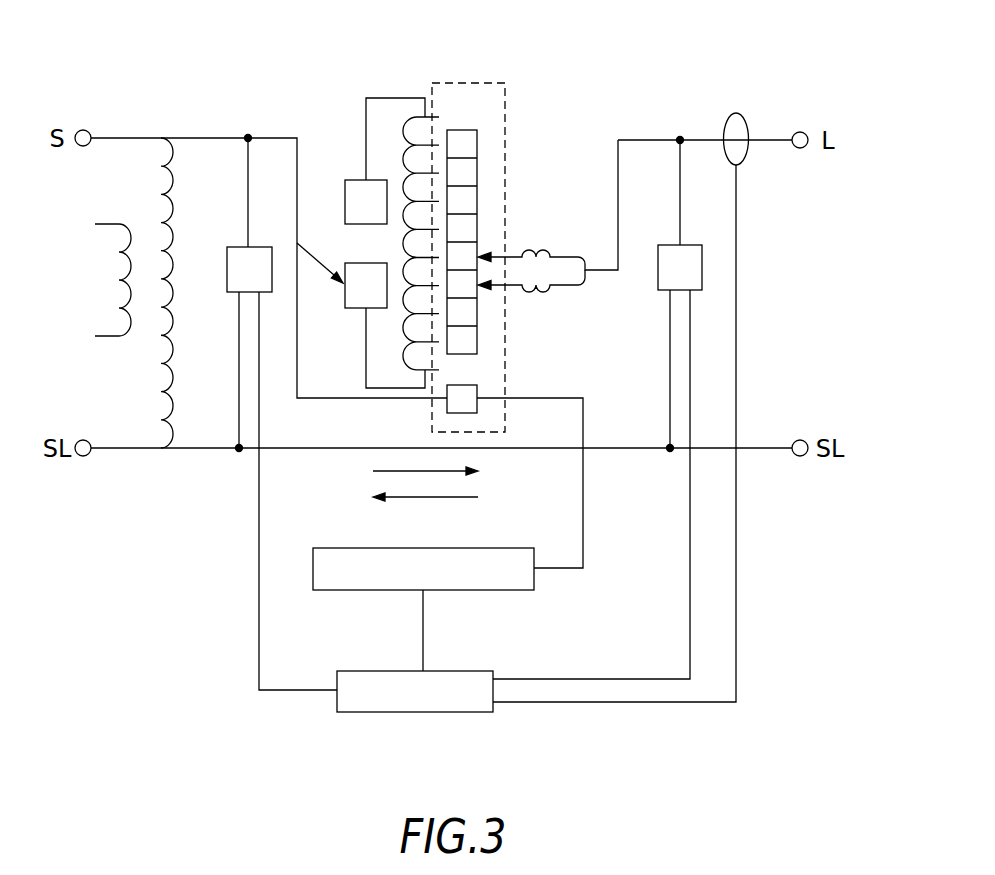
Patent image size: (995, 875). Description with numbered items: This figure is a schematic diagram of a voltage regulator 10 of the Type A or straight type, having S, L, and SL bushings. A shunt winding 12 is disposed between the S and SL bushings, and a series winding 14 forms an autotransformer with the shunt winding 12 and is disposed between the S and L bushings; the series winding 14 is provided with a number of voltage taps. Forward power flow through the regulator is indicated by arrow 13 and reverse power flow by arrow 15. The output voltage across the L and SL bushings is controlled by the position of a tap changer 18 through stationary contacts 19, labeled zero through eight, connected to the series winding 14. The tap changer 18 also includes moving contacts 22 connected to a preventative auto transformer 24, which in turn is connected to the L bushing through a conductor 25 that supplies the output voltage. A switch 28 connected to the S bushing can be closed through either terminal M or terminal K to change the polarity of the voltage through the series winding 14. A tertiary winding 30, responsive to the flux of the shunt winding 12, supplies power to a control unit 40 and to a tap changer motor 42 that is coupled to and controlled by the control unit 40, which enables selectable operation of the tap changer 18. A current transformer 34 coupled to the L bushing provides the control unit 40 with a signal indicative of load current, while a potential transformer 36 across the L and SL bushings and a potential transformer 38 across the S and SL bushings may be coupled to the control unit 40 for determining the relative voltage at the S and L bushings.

The voltage regulator 10 is at (192, 103).
The shunt winding 12 is at (160, 194).
The arrow 13 is at (403, 470).
The series winding 14 is at (403, 240).
The arrow 15 is at (418, 498).
The tap changer 18 is at (468, 83).
The stationary contacts 19 is at (477, 141).
The moving contacts 22 is at (485, 257).
The preventative auto transformer 24 is at (544, 250).
The conductor 25 is at (617, 155).
The switch 28 is at (331, 228).
The tertiary winding 30 is at (118, 280).
The current transformer 34 is at (747, 152).
The potential transformer 36 is at (690, 245).
The potential transformer 38 is at (233, 247).
The control unit 40 is at (443, 712).
The tap changer motor 42 is at (328, 548).